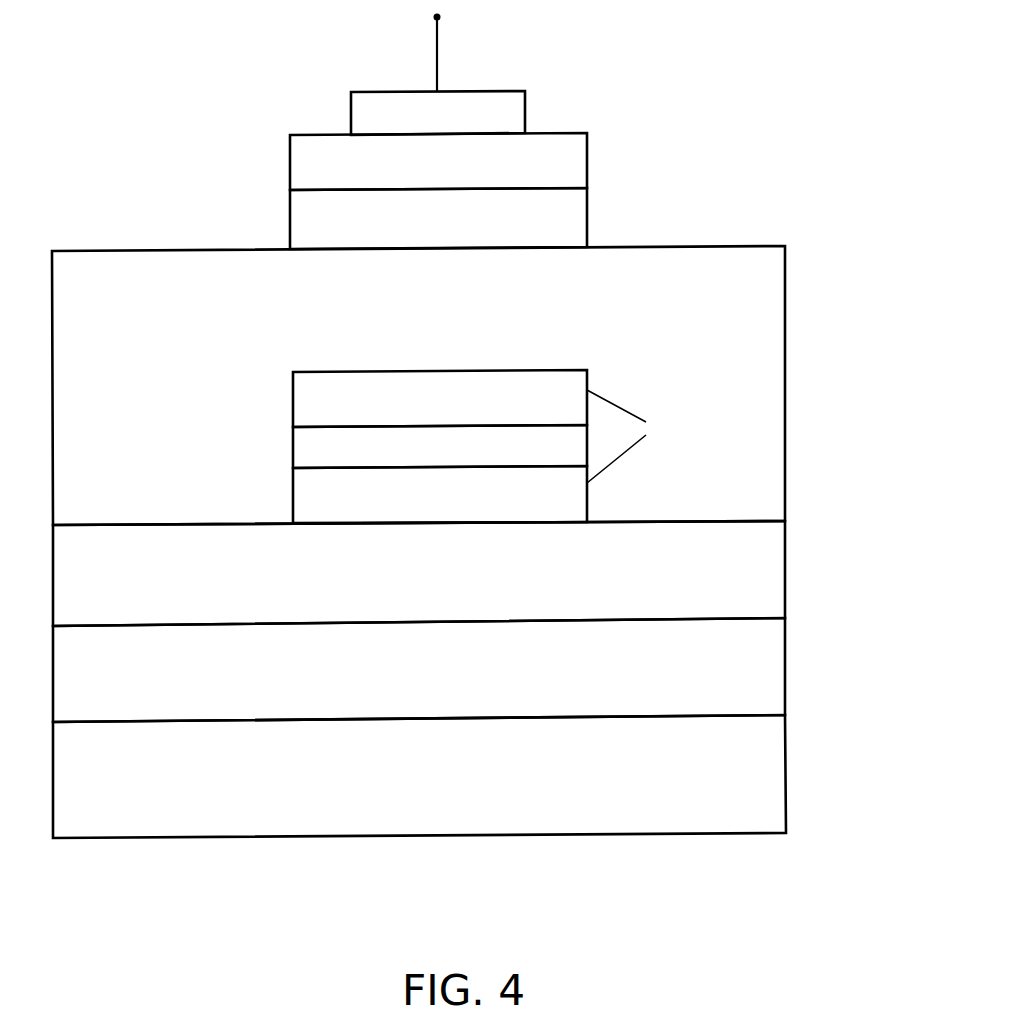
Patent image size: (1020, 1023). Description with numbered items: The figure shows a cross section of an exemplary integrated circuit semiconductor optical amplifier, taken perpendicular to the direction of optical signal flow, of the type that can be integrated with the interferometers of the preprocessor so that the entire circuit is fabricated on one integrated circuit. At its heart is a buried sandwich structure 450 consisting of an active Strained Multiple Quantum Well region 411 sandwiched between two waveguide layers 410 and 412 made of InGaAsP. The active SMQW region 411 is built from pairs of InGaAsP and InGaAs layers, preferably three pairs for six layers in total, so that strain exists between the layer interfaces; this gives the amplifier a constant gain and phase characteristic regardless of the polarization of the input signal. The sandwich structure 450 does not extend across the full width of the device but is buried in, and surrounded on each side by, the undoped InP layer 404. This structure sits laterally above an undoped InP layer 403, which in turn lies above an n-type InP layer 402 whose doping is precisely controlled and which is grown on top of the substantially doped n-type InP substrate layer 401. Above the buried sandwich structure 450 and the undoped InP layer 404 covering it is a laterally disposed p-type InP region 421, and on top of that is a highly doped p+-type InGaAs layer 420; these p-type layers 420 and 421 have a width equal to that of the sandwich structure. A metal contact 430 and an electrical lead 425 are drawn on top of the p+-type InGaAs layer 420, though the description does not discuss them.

The n-type InP substrate 401 is at (745, 782).
The n-type InP layer 402 is at (740, 673).
The undoped InP layer 403 is at (733, 570).
The undoped InP layer 404 is at (608, 290).
The waveguide layer 410 is at (292, 400).
The active Strained Multiple Quantum Well region 411 is at (292, 450).
The waveguide layer 412 is at (384, 494).
The buried sandwich structure 450 is at (429, 445).
The p+-type InGaAs layer 420 is at (290, 162).
The p-type InP region 421 is at (290, 237).
The electrical lead / contact terminal 425 is at (439, 33).
The metal contact electrode 430 is at (508, 108).